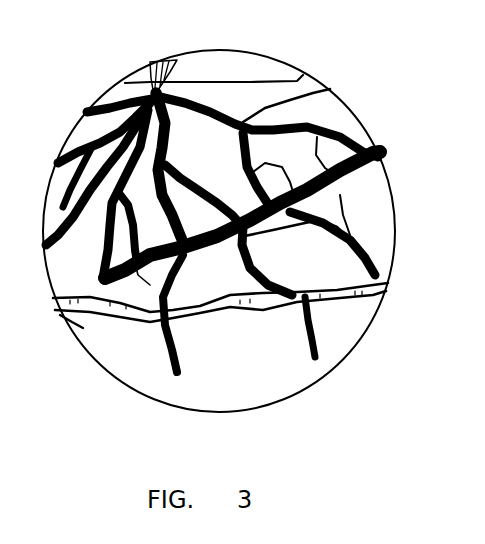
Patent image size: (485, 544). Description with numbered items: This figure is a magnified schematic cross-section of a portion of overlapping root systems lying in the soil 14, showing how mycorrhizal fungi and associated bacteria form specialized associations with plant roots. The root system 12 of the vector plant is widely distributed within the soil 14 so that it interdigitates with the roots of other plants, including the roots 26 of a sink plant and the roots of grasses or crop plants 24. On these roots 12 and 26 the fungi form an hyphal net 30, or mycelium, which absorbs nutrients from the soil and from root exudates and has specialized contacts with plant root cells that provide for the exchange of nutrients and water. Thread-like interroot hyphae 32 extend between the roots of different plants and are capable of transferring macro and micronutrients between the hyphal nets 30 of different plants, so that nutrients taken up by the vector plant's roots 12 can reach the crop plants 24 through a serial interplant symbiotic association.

The root system 12 is at (372, 286).
The soil 14 is at (253, 364).
The grasses or crop plants 24 is at (177, 70).
The roots 26 is at (277, 122).
The hyphal net 30 is at (318, 322).
The interroot hyphae 32 is at (140, 275).